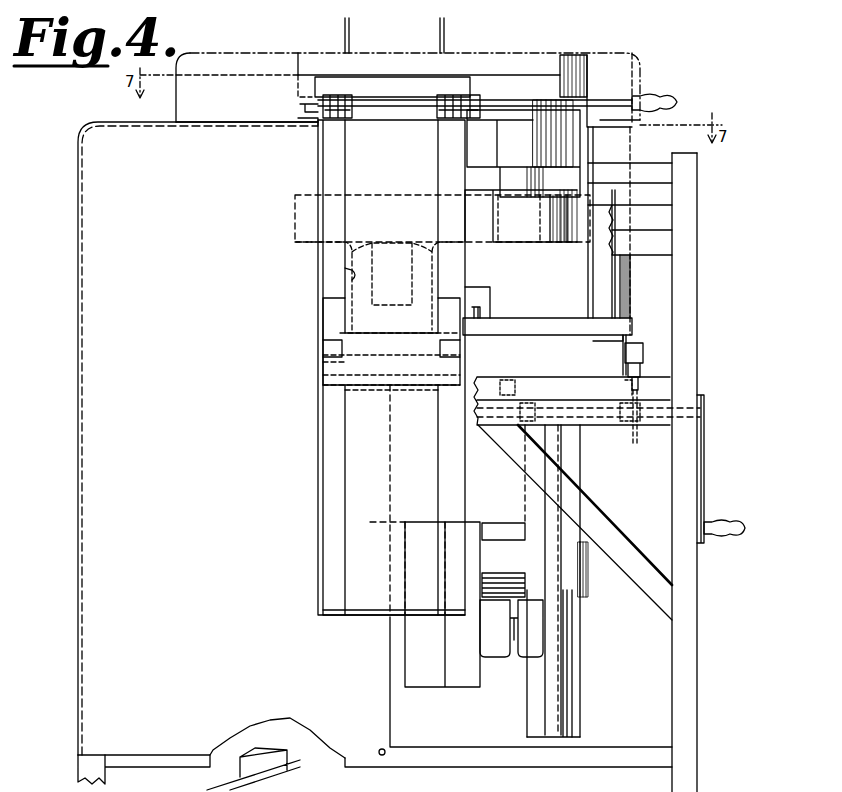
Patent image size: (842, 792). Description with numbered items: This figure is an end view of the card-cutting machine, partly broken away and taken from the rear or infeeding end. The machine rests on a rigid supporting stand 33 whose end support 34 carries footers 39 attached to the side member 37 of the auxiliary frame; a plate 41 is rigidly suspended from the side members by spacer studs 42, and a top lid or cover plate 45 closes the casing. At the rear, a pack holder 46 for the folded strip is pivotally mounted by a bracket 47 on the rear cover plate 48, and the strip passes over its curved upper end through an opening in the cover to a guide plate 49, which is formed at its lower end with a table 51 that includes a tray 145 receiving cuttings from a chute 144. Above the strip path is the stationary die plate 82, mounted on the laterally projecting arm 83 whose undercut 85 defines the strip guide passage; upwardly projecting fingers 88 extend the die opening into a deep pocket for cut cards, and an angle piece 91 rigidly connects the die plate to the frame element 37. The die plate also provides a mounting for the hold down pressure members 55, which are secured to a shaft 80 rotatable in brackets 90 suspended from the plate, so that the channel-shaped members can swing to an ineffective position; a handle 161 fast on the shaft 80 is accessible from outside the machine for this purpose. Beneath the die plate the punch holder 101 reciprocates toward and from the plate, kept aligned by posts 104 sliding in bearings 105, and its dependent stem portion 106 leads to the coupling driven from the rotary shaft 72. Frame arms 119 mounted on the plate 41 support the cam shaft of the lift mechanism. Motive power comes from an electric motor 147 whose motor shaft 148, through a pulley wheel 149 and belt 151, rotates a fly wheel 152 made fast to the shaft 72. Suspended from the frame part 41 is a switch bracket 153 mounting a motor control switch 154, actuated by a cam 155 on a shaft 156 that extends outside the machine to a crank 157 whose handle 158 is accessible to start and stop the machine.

The supporting stand 33 is at (710, 704).
The end support 34 is at (662, 218).
The side member 37 is at (625, 175).
The footer 39 is at (672, 190).
The plate 41 is at (538, 325).
The spacer stud 42 is at (600, 290).
The top lid or cover plate 45 is at (632, 64).
The pack holder 46 is at (360, 613).
The bracket 47 is at (335, 318).
The rear cover plate 48 is at (87, 380).
The guide plate 49 is at (318, 155).
The table 51 is at (400, 385).
The hold down pressure member 55 is at (345, 120).
The rotary shaft 72 is at (590, 600).
The shaft 80 is at (622, 100).
The die plate 82 is at (518, 60).
The arm 83 is at (207, 114).
The undercut 85 is at (310, 104).
The finger 88 is at (446, 30).
The bracket 90 is at (472, 85).
The angle piece 91 is at (590, 82).
The punch holder 101 is at (558, 237).
The post 104 is at (530, 182).
The bearing 105 is at (492, 160).
The stem portion 106 is at (368, 255).
The frame arm 119 is at (487, 296).
The chute 144 is at (352, 278).
The tray 145 is at (340, 375).
The electric motor 147 is at (425, 688).
The motor shaft 148 is at (515, 648).
The pulley wheel 149 is at (564, 680).
The belt 151 is at (566, 702).
The fly wheel 152 is at (572, 723).
The switch bracket 153 is at (623, 360).
The motor control switch 154 is at (640, 357).
The cam 155 is at (633, 445).
The shaft 156 is at (592, 425).
The crank 157 is at (705, 475).
The handle 158 is at (722, 536).
The handle 161 is at (672, 99).